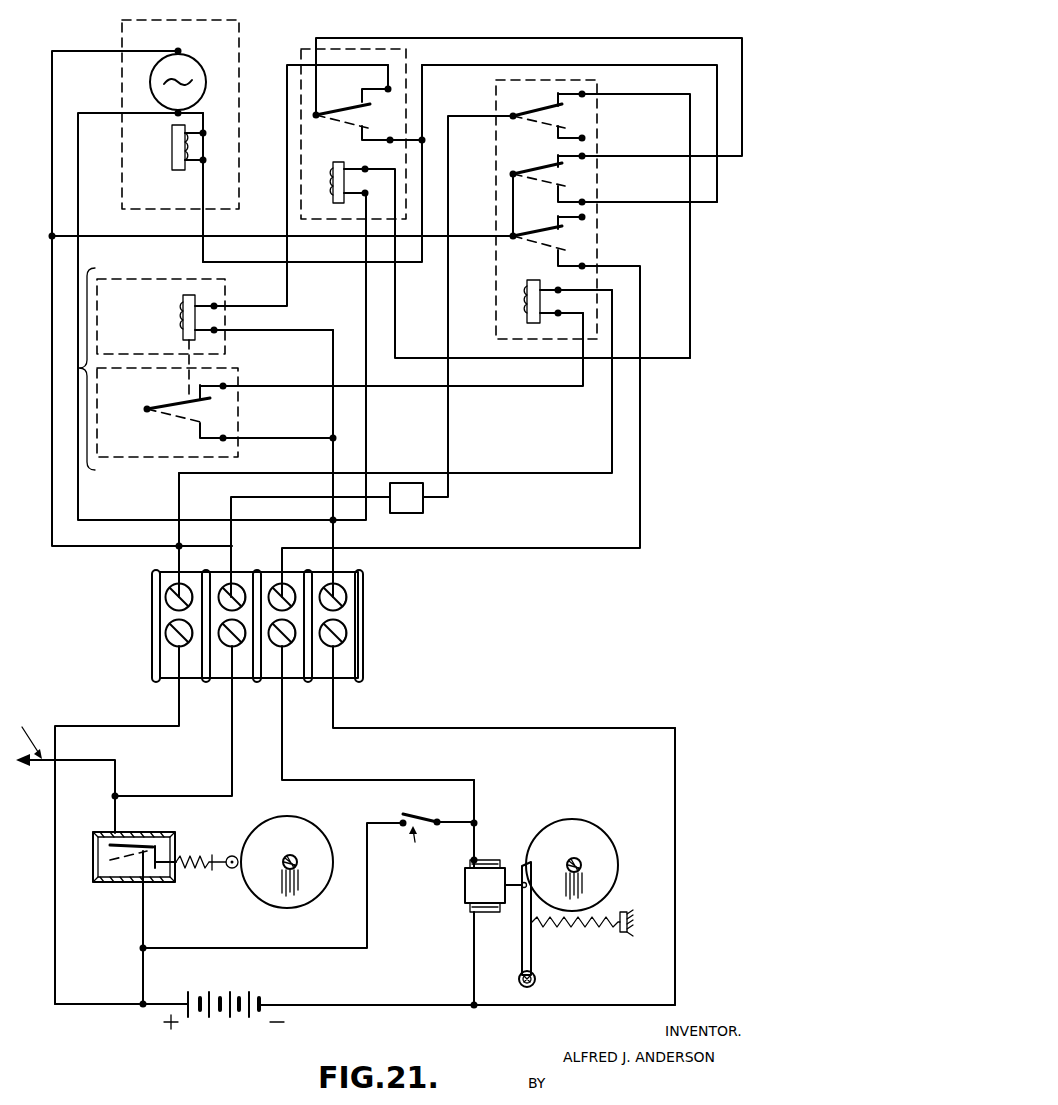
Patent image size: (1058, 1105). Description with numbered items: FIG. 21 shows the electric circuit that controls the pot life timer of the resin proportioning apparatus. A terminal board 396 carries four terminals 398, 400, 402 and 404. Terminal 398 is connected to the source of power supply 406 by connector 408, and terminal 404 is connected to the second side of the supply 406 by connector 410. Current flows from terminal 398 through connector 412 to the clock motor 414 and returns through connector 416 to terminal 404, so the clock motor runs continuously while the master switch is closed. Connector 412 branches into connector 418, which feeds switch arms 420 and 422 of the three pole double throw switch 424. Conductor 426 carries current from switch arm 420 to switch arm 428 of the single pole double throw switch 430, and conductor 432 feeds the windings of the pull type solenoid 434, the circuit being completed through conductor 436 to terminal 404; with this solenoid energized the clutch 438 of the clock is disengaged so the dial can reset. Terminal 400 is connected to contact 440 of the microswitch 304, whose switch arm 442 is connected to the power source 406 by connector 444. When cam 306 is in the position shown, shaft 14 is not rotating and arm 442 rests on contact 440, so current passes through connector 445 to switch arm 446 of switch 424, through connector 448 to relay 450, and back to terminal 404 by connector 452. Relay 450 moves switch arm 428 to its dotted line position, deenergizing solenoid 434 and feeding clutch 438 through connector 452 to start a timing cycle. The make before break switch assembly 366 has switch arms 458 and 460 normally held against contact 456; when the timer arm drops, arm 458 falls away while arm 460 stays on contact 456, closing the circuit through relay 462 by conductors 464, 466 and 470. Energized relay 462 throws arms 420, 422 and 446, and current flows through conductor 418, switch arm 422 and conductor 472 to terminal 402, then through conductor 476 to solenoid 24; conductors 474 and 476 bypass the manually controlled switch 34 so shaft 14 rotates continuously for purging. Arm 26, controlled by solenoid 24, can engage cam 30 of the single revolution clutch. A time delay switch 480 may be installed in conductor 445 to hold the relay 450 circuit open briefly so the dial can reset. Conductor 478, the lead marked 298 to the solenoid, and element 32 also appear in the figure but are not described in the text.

The connector 412 is at (103, 54).
The clock motor 414 is at (195, 70).
The connector 416 is at (121, 110).
The connector 418 is at (153, 234).
The switch arm 420 is at (538, 150).
The switch arm 422 is at (540, 222).
The three pole double throw switch 424 is at (557, 80).
The conductor 426 is at (473, 36).
The switch arm 428 is at (345, 100).
The single pole double throw switch 430 is at (372, 50).
The conductor 432 is at (287, 160).
The pull type solenoid 434 is at (180, 301).
The conductor 436 is at (335, 332).
The clutch 438 is at (172, 158).
The contact 440 is at (112, 839).
The switch arm 442 is at (145, 846).
The connector 444 is at (145, 936).
The connector 445 is at (484, 113).
The switch arm 446 is at (539, 113).
The connector 448 is at (692, 350).
The relay 450 is at (332, 166).
The connector 452 is at (343, 268).
The contact 456 is at (241, 398).
The switch arm 458 is at (198, 430).
The switch arm 460 is at (177, 402).
The relay 462 is at (522, 295).
The conductor 464 is at (547, 474).
The conductor 466 is at (427, 392).
The conductor 470 is at (333, 459).
The conductor 472 is at (640, 500).
The conductor 474 is at (476, 814).
The conductor 476 is at (474, 968).
The conductor 478 is at (717, 196).
The time delay switch 480 is at (423, 510).
The make before break switch assembly 366 is at (79, 368).
The terminal board 396 is at (360, 637).
The terminal 398 is at (160, 660).
The terminal 400 is at (226, 668).
The terminal 402 is at (275, 668).
The terminal 404 is at (345, 667).
The solenoid lead 298 is at (150, 726).
The microswitch 304 is at (108, 872).
The cam 306 is at (303, 812).
The shaft 14 is at (287, 858).
The source of power supply 406 is at (248, 1028).
The connector 408 is at (120, 1008).
The connector 410 is at (677, 886).
The manually controlled switch 34 is at (435, 842).
The solenoid 24 is at (465, 889).
The arm 26 is at (522, 946).
The cam 30 is at (600, 812).
The spring 32 is at (600, 928).